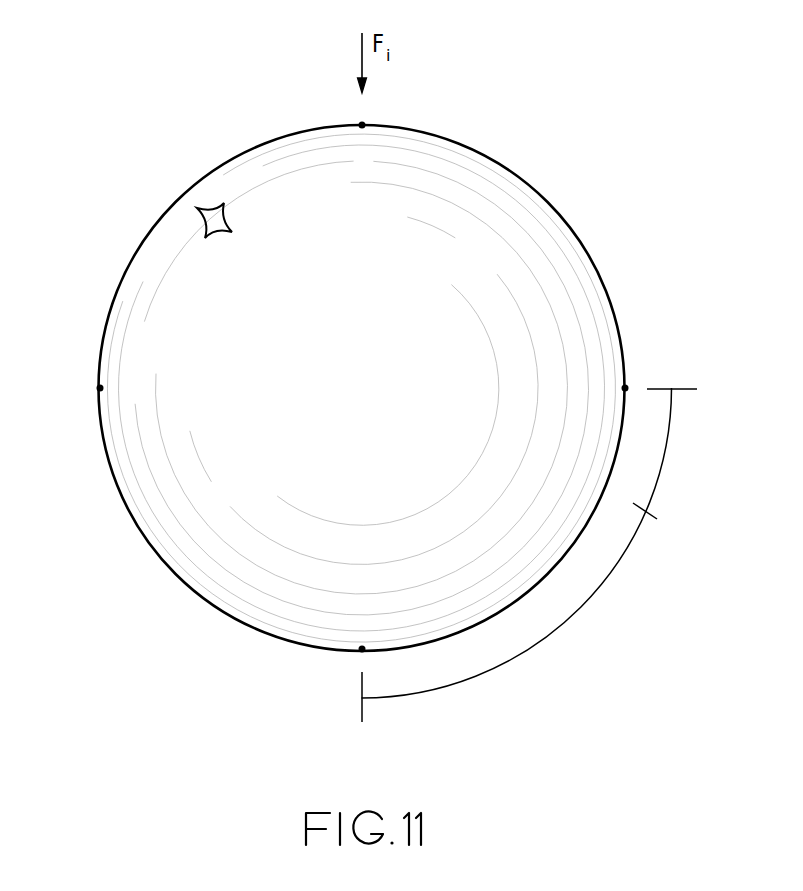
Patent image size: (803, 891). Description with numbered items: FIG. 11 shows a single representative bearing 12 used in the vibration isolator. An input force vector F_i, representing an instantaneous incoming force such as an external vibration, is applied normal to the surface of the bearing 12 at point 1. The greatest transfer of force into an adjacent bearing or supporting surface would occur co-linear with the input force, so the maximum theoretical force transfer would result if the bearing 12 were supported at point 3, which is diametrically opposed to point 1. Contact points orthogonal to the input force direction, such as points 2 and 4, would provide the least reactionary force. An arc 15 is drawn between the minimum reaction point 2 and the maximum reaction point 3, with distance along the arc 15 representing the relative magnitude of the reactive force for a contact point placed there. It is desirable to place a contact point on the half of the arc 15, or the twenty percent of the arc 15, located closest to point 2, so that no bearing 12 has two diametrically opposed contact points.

The input force point 1 is at (362, 125).
The minimum reaction point 2 is at (625, 388).
The maximum reaction point 3 is at (362, 649).
The orthogonal contact point 4 is at (100, 388).
The bearing 12 is at (572, 230).
The arc 15 is at (525, 652).